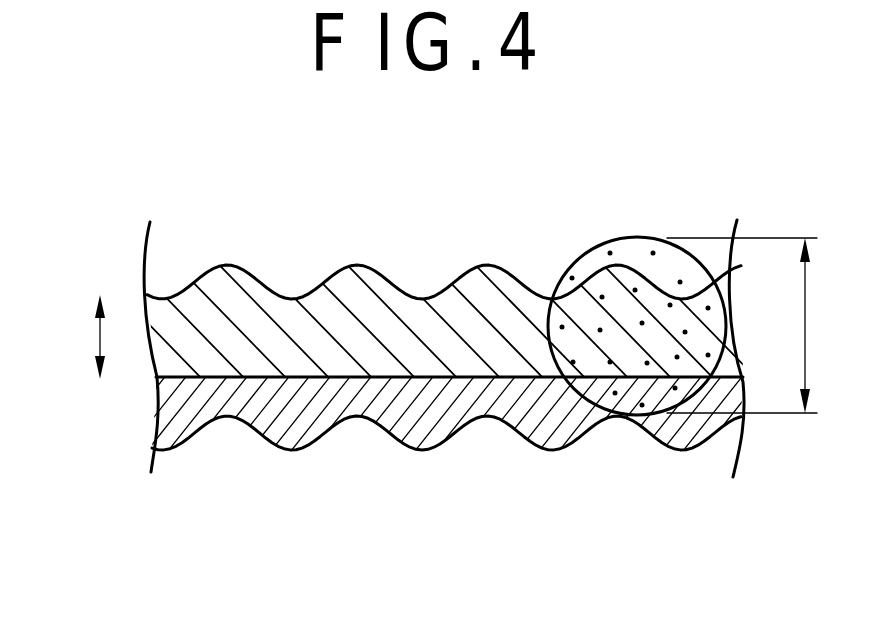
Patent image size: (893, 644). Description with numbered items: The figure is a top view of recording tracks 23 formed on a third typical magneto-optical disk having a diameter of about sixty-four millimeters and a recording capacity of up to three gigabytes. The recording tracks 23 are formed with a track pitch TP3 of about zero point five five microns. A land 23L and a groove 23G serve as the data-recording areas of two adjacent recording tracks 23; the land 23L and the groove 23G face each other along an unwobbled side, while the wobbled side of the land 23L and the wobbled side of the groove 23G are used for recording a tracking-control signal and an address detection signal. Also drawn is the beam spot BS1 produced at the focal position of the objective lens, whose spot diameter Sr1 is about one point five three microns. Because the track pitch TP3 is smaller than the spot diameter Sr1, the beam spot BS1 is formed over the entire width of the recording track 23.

The recording tracks 23 is at (415, 363).
The land 23L is at (248, 327).
The groove 23G is at (557, 422).
The beam spot BS1 is at (632, 237).
The track pitch TP3 is at (73, 337).
The spot diameter Sr1 is at (749, 325).